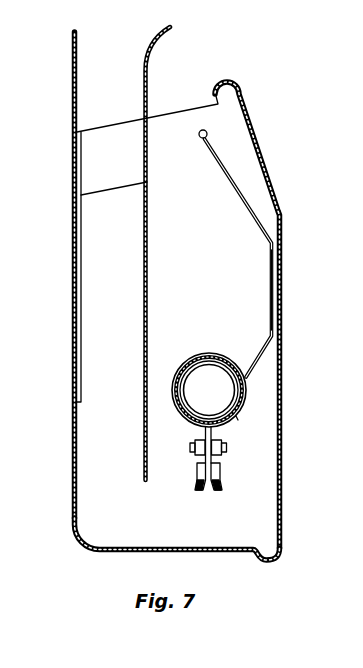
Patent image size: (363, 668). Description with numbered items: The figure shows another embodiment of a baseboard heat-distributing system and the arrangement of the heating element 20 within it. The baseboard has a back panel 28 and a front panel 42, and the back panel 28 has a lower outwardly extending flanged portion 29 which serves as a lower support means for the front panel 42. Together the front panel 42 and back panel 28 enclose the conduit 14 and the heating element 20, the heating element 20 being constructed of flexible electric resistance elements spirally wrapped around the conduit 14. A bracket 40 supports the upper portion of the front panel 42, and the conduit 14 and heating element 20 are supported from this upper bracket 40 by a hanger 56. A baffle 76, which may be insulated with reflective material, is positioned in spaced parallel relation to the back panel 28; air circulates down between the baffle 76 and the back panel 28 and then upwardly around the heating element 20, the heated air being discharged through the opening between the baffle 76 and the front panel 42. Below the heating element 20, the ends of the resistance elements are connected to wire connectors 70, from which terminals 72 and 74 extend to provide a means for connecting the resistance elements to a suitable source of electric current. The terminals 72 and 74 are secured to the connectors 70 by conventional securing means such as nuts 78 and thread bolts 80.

The conduit 14 is at (192, 373).
The heating element 20 is at (206, 347).
The back panel 28 is at (72, 196).
The lower outwardly extending flanged portion 29 is at (157, 552).
The bracket 40 is at (198, 115).
The front panel 42 is at (262, 154).
The hanger 56 is at (252, 202).
The wire connectors 70 is at (237, 417).
The terminal 72 is at (222, 487).
The terminal 74 is at (196, 487).
The baffle 76 is at (152, 48).
The nuts 78 is at (224, 444).
The thread bolts 80 is at (195, 447).